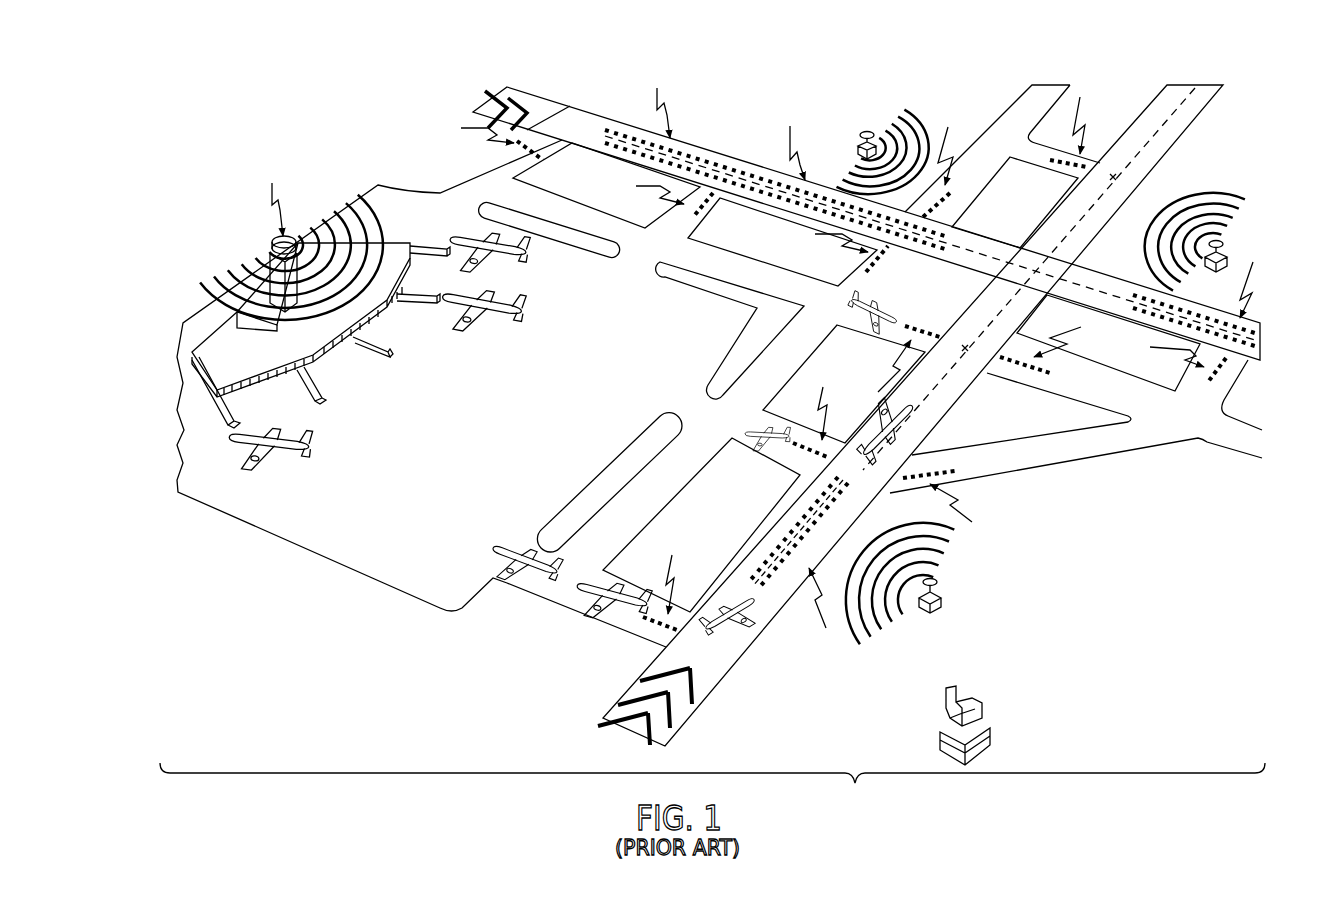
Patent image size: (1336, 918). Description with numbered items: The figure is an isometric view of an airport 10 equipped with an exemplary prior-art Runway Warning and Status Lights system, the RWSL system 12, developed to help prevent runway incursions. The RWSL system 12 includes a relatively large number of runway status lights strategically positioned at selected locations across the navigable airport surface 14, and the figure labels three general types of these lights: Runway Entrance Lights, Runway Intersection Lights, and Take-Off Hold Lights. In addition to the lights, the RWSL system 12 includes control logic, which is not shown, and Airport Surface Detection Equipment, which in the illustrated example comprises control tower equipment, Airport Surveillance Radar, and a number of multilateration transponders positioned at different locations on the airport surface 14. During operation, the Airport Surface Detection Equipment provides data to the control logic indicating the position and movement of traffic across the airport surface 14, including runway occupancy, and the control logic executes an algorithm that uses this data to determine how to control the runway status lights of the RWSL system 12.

The airport 10 is at (727, 408).
The RWSL system 12 is at (712, 789).
The airport surface 14 is at (857, 96).